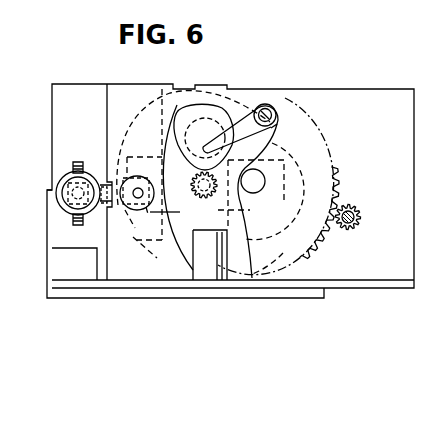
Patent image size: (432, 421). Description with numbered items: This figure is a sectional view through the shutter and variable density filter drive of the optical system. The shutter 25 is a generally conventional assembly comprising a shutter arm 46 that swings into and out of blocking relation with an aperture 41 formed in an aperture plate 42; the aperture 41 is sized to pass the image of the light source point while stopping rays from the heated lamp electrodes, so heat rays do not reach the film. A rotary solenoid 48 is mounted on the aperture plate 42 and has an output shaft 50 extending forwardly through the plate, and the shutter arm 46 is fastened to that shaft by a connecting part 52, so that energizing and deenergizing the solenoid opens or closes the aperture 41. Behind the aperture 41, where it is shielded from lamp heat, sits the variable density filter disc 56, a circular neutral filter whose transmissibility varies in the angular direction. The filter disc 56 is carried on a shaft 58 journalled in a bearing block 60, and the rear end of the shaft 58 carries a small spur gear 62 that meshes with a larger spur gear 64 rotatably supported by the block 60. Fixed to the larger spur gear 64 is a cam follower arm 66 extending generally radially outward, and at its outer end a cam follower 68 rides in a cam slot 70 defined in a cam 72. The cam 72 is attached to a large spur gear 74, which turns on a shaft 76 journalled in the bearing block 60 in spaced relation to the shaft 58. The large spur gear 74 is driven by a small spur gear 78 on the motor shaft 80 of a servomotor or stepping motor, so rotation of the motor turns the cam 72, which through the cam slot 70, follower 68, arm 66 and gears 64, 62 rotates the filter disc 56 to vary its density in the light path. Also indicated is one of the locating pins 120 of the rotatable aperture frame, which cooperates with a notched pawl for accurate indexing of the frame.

The shutter 25 is at (44, 170).
The aperture 41 is at (123, 212).
The aperture plate 42 is at (70, 95).
The shutter arm 46 is at (143, 184).
The rotary solenoid 48 is at (61, 175).
The output shaft 50 is at (63, 214).
The connecting part 52 is at (93, 214).
The variable density filter disc 56 is at (128, 134).
The shaft 58 is at (141, 204).
The bearing block 60 is at (301, 184).
The small spur gear 62 is at (183, 187).
The larger spur gear 64 is at (168, 105).
The cam follower arm 66 is at (243, 118).
The cam follower 68 is at (274, 106).
The cam slot 70 is at (240, 165).
The cam 72 is at (214, 258).
The large spur gear 74 is at (306, 145).
The shaft 76 is at (257, 193).
The small spur gear 78 is at (358, 212).
The motor shaft 80 is at (357, 226).
The locating pins 120 is at (239, 181).